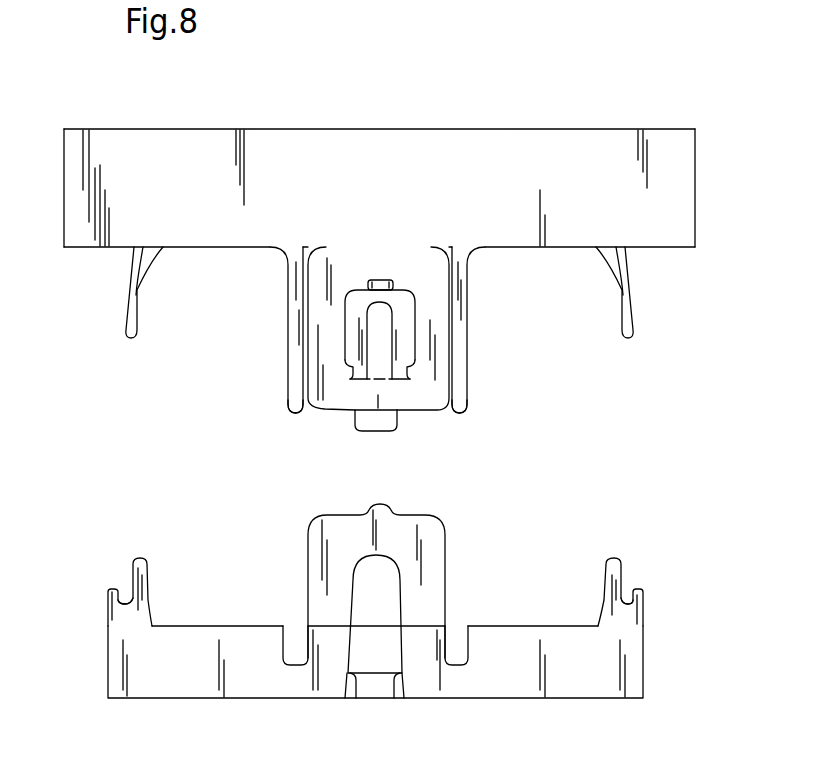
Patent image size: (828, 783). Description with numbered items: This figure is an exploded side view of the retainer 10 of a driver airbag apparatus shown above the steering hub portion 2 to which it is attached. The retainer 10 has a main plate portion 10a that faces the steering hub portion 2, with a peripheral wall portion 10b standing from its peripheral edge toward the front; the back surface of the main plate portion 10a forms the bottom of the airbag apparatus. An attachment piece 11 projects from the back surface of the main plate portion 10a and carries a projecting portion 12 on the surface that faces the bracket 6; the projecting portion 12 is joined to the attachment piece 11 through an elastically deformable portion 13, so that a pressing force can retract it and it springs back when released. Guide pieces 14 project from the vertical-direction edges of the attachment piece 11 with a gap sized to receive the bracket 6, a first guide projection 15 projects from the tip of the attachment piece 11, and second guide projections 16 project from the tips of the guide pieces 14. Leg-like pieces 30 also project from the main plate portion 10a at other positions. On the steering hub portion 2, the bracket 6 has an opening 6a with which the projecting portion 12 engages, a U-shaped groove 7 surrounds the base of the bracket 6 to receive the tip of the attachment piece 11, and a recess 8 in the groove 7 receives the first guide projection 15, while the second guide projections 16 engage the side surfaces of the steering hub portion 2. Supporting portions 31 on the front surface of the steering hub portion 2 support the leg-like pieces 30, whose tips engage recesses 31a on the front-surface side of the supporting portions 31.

The retainer 10 is at (581, 104).
The main plate portion 10a is at (554, 249).
The peripheral wall portion 10b is at (444, 128).
The attachment piece 11 is at (325, 415).
The projecting portion 12 is at (397, 291).
The elastically deformable portion 13 is at (357, 350).
The guide piece 14 is at (288, 300).
The first guide projection 15 is at (395, 431).
The second guide projection 16 is at (290, 418).
The leg-like piece 30 is at (128, 298).
The steering hub portion 2 is at (563, 699).
The bracket 6 is at (443, 540).
The opening 6a is at (372, 575).
The groove 7 is at (290, 640).
The recess 8 is at (393, 688).
The supporting portion 31 is at (106, 600).
The recess 31a is at (122, 596).